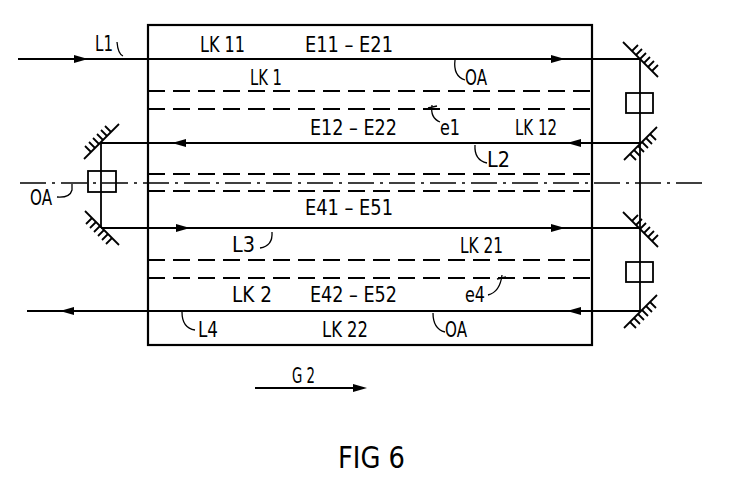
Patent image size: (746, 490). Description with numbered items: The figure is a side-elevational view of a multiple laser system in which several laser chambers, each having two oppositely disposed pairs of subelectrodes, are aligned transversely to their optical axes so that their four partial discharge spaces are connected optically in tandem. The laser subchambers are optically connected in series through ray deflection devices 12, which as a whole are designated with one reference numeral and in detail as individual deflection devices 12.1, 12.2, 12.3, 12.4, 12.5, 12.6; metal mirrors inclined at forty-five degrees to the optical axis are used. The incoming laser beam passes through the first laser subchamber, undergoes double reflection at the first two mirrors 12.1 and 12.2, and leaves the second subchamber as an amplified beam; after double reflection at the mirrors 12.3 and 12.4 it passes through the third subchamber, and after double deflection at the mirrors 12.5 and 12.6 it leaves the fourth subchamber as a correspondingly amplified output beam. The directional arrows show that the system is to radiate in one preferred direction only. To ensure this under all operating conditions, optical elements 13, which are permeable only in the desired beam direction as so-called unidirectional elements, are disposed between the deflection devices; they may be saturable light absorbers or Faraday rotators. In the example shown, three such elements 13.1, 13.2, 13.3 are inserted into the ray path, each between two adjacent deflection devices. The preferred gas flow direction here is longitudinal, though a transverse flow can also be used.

The ray deflection devices 12 is at (653, 218).
The ray deflection device 12.1 is at (657, 57).
The ray deflection device 12.2 is at (658, 132).
The ray deflection device 12.3 is at (105, 127).
The ray deflection device 12.4 is at (100, 240).
The ray deflection device 12.5 is at (658, 228).
The ray deflection device 12.6 is at (648, 323).
The optical elements 13 is at (734, 212).
The optical element 13.1 is at (654, 103).
The optical element 13.2 is at (88, 174).
The optical element 13.3 is at (654, 272).